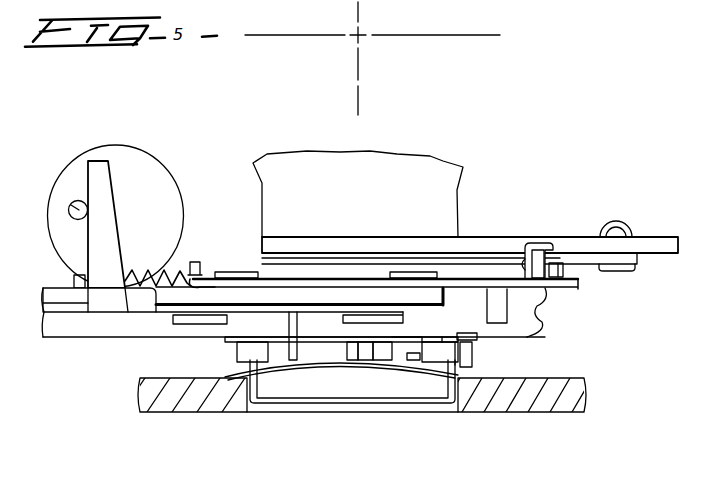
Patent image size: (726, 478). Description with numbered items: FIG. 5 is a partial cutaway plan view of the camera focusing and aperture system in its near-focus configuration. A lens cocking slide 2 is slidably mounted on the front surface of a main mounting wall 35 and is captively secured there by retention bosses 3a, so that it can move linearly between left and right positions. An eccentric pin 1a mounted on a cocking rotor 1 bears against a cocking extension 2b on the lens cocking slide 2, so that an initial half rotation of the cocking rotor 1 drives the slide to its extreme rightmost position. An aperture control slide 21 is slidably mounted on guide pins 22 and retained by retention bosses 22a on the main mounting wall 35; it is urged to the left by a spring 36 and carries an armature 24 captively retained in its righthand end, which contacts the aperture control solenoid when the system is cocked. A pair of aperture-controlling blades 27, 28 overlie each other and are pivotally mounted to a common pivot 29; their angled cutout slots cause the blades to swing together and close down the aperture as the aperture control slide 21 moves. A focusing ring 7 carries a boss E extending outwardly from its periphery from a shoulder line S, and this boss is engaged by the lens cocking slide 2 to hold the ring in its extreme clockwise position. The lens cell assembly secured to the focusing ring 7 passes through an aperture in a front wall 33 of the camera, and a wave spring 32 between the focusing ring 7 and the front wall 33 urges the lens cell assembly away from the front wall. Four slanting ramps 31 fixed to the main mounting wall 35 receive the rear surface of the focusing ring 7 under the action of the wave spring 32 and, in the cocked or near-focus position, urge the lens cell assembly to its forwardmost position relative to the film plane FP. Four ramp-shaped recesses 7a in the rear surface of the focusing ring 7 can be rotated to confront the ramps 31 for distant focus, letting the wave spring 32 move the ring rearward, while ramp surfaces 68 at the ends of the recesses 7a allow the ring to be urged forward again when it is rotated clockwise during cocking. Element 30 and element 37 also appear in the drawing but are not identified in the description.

The cocking rotor 1 is at (138, 158).
The eccentric pin 1a is at (71, 204).
The lens cocking slide 2 is at (103, 298).
The cocking extension 2b is at (113, 182).
The retention bosses 3a is at (180, 330).
The focusing ring 7 is at (473, 356).
The ramp-shaped recesses 7a is at (395, 345).
The aperture control slide 21 is at (575, 283).
The guide pins 22 is at (298, 327).
The retention bosses 22a is at (222, 272).
The armature 24 is at (540, 256).
The aperture-controlling blade 27 is at (262, 262).
The aperture-controlling blade 28 is at (262, 253).
The common pivot 29 is at (633, 271).
The optical axis 30 is at (358, 86).
The slanting ramps 31 is at (233, 342).
The wave spring 32 is at (245, 378).
The front wall 33 is at (213, 398).
The main mounting wall 35 is at (543, 330).
The spring 36 is at (74, 277).
The integrated circuit package 37 is at (277, 173).
The ramp surfaces 68 is at (380, 345).
The boss E is at (357, 353).
The shoulder line S is at (417, 353).
The film plane FP is at (460, 35).